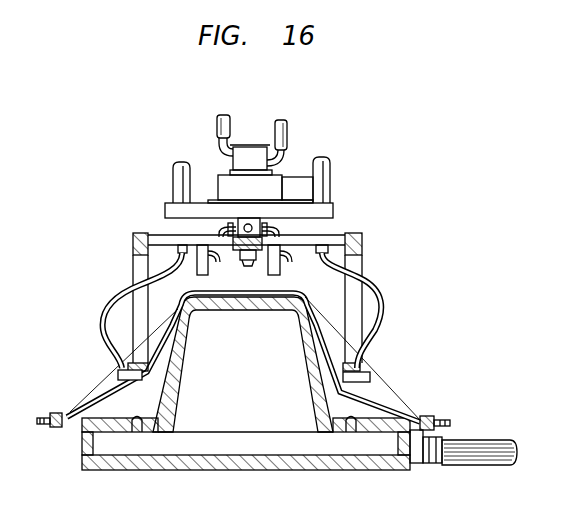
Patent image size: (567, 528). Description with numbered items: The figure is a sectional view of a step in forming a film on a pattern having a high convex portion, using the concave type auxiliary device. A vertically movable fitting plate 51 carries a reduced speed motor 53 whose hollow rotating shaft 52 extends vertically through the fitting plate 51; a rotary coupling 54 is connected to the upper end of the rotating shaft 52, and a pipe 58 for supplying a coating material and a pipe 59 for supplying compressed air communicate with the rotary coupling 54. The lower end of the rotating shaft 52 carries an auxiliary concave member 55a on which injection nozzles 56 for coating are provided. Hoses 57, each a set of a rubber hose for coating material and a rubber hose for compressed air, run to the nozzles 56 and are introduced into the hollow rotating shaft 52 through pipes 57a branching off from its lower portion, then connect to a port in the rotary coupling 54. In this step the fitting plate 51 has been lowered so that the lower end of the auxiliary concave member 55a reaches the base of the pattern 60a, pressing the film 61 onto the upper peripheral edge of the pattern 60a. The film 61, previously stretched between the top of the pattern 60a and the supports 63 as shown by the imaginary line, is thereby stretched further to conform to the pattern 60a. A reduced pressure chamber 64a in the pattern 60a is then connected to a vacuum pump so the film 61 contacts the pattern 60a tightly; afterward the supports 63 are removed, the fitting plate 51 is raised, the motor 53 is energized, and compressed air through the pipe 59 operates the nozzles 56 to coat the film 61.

The fitting plate 51 is at (333, 211).
The hollow rotating shaft 52 is at (251, 218).
The reduced speed motor 53 is at (275, 185).
The rotary coupling 54 is at (255, 150).
The auxiliary concave member 55a is at (362, 244).
The injection nozzles 56 is at (120, 372).
The hoses 57 is at (120, 287).
The pipes 57a is at (285, 228).
The pipe for supplying a coating material 58 is at (283, 126).
The pipe for supplying compressed air 59 is at (220, 122).
The pattern having a high convex portion 60a is at (177, 432).
The film 61 is at (100, 401).
The supports 63 is at (53, 412).
The reduced pressure chamber 64a is at (287, 443).